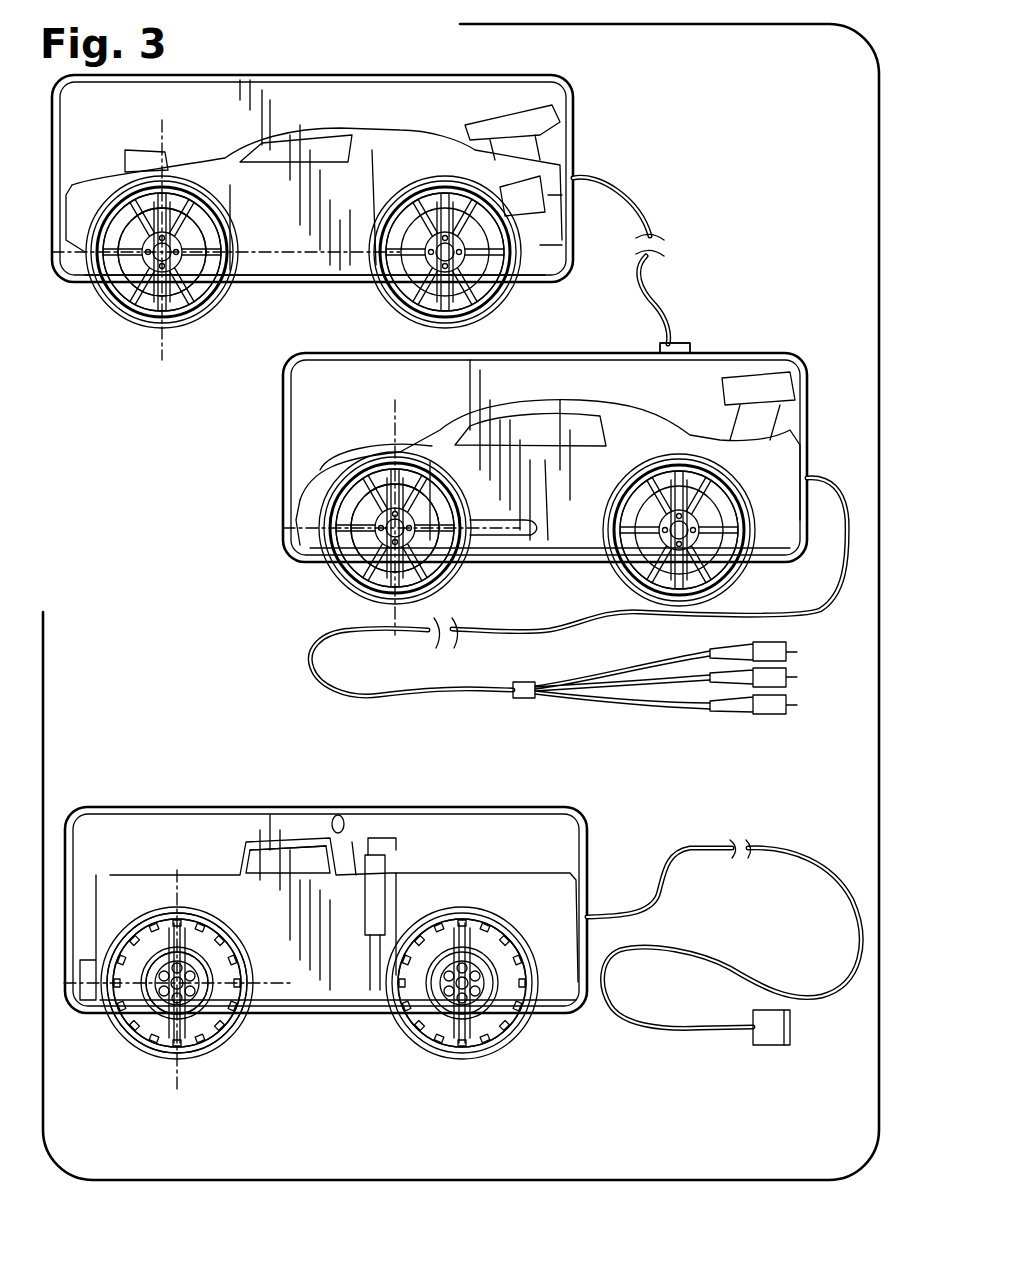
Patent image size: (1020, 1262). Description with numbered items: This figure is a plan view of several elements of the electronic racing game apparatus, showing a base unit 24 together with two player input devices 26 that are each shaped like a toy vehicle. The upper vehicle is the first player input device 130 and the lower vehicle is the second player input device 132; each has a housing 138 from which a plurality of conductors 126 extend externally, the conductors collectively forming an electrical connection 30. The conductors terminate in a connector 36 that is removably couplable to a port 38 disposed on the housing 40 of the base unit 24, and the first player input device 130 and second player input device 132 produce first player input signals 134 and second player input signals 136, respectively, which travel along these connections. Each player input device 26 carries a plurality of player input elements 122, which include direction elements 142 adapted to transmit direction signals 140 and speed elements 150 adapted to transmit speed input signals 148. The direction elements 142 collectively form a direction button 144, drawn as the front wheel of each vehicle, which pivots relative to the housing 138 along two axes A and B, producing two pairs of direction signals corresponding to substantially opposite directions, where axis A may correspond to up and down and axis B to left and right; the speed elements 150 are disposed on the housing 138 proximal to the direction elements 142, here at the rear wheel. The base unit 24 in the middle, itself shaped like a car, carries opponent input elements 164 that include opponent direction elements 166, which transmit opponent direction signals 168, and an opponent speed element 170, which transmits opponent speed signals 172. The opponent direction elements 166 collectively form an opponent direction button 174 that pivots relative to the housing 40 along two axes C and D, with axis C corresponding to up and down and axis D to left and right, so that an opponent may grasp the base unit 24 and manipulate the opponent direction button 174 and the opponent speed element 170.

The base unit 24 is at (748, 352).
The player input device 26 is at (168, 75).
The electrical connection 30 is at (647, 224).
The connector 36 is at (685, 346).
The port 38 is at (665, 346).
The housing 40 is at (782, 418).
The player input elements 122 is at (122, 276).
The conductors 126 is at (604, 182).
The first player input device 130 is at (440, 75).
The second player input device 132 is at (305, 812).
The first player input signals 134 is at (648, 262).
The second player input signals 136 is at (705, 847).
The housing 138 is at (305, 88).
The direction signals 140 is at (178, 302).
The direction elements 142 is at (140, 296).
The direction button 144 is at (205, 283).
The speed input signals 148 is at (480, 295).
The speed elements 150 is at (410, 300).
The opponent input elements 164 is at (352, 556).
The opponent direction elements 166 is at (370, 577).
The opponent direction signals 168 is at (410, 578).
The opponent speed element 170 is at (722, 565).
The opponent speed signals 172 is at (688, 572).
The opponent direction button 174 is at (435, 562).
The axis A is at (270, 252).
The axis B is at (158, 140).
The axis C is at (502, 524).
The axis D is at (392, 424).